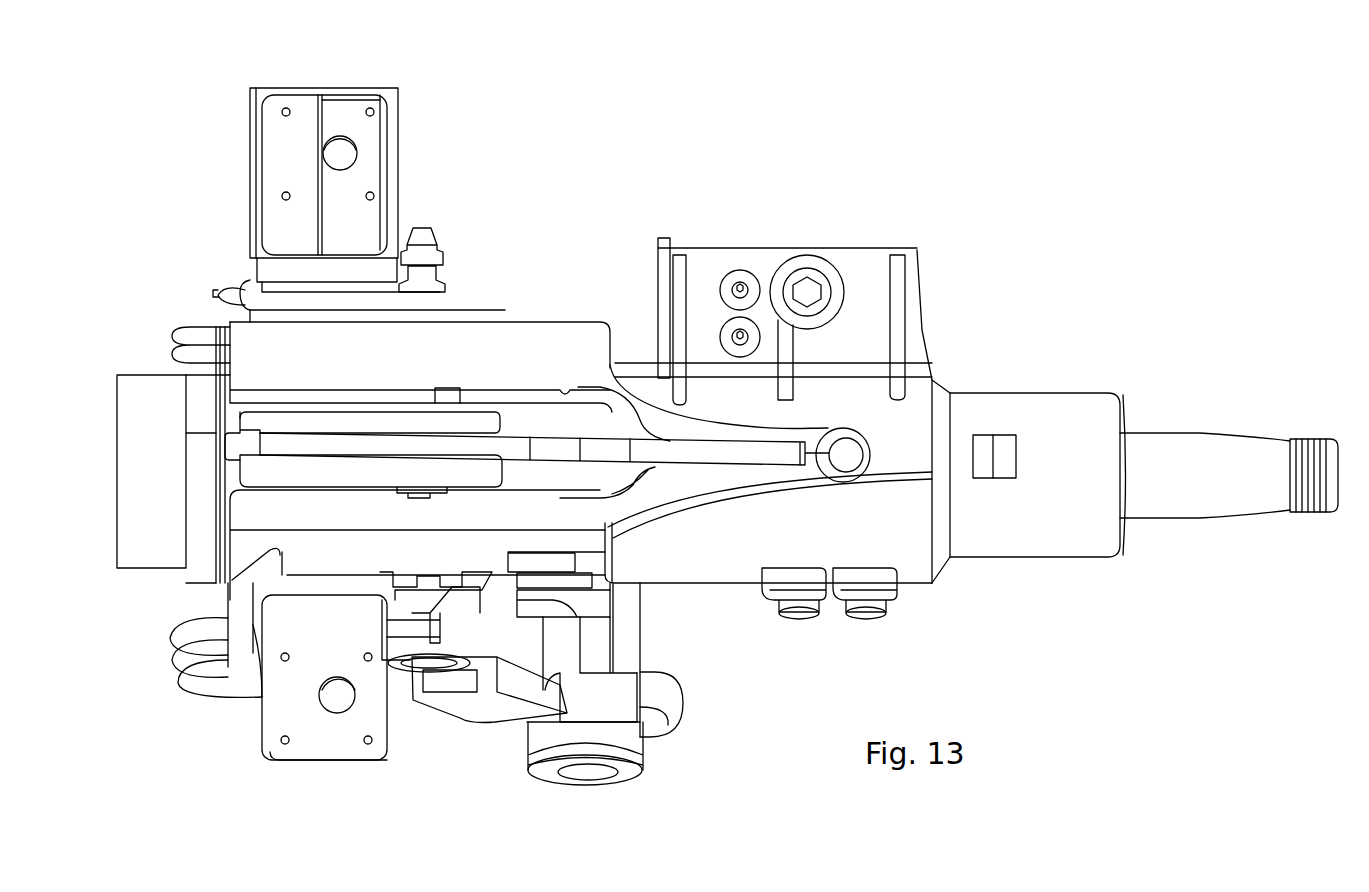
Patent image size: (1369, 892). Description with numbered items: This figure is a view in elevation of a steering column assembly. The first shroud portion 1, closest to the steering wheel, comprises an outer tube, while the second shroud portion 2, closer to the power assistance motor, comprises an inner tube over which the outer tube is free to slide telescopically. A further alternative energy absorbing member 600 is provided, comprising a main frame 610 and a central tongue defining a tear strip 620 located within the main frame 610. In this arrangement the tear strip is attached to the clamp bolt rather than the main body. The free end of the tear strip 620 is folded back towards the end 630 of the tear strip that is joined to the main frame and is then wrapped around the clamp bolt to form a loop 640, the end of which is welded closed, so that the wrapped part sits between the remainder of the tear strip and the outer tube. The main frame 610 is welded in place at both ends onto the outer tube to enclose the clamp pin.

The first shroud portion 1 is at (1020, 393).
The second shroud portion 2 is at (138, 375).
The energy absorbing member 600 is at (306, 487).
The main frame 610 is at (455, 405).
The tear strip 620 is at (388, 432).
The end of the tear strip 630 is at (260, 443).
The loop 640 is at (452, 482).